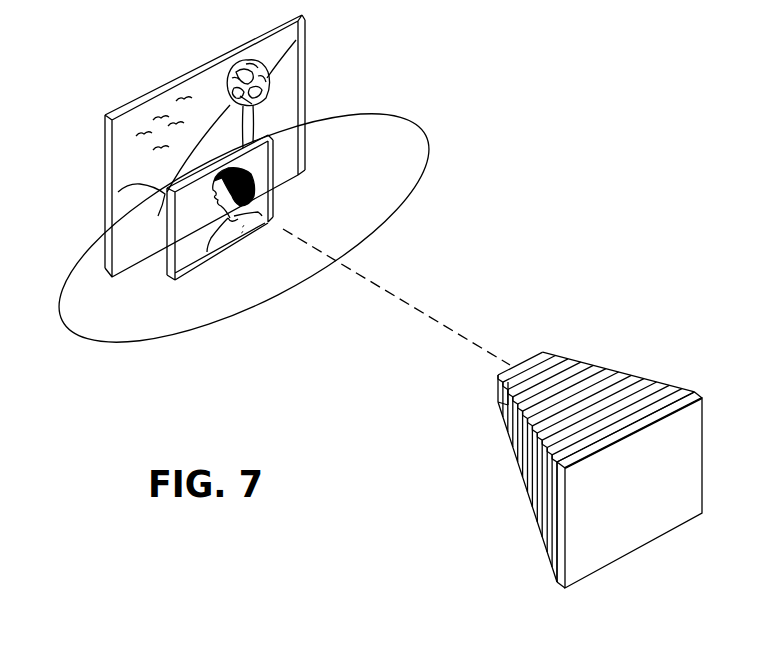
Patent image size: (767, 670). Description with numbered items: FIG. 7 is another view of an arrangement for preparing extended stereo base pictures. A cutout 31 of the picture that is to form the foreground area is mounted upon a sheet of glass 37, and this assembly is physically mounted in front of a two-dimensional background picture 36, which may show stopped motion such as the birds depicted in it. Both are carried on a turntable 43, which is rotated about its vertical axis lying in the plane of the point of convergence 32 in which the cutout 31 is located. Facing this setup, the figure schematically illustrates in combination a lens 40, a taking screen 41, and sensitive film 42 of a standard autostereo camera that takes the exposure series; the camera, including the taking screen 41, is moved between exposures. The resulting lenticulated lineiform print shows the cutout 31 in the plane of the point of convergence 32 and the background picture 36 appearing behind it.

The cutout 31 is at (250, 210).
The point of convergence 32 is at (219, 195).
The background picture 36 is at (295, 52).
The sheet of glass 37 is at (262, 152).
The lens 40 is at (542, 353).
The taking screen 41 is at (693, 392).
The sensitive film 42 is at (649, 474).
The turntable 43 is at (132, 332).